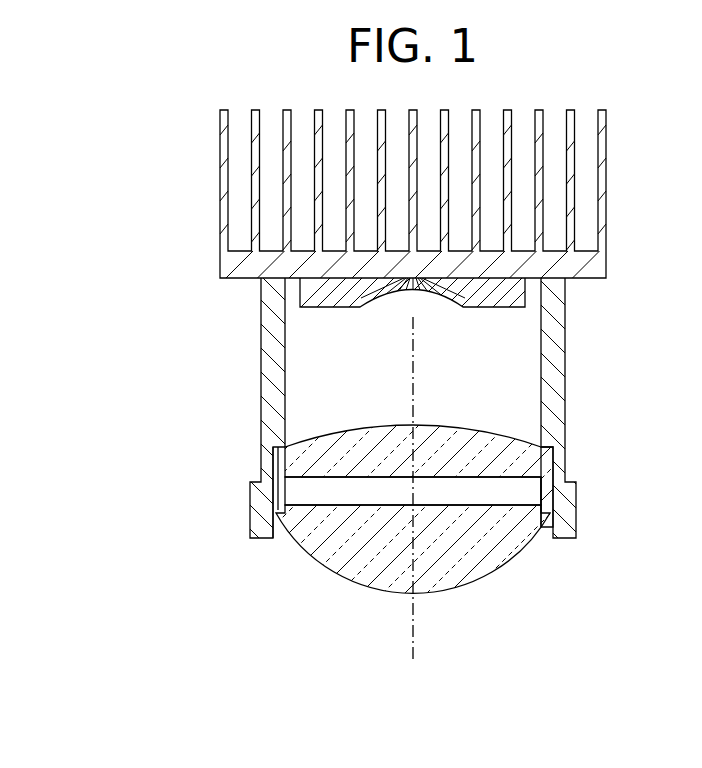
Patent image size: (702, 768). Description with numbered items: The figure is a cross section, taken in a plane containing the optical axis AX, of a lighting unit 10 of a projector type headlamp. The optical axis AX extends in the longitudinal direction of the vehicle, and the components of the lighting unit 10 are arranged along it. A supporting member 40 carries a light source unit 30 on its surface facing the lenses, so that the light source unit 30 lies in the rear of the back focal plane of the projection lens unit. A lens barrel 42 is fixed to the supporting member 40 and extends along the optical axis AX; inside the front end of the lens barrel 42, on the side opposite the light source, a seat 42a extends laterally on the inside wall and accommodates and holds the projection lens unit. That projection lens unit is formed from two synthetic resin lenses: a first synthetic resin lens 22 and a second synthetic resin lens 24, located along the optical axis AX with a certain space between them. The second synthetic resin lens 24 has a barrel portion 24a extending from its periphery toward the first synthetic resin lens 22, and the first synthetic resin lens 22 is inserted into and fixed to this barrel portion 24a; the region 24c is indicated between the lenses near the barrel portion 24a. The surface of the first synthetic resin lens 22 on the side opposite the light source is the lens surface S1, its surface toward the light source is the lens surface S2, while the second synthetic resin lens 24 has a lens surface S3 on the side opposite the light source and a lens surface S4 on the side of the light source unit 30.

The lighting unit 10 is at (228, 307).
The supporting member 40 is at (607, 272).
The light source unit 30 is at (512, 308).
The lens barrel 42 is at (272, 360).
The seat 42a is at (272, 447).
The second synthetic resin lens 24 is at (438, 440).
The barrel portion 24a is at (552, 498).
The recess of first lens 24c is at (507, 493).
The first synthetic resin lens 22 is at (482, 582).
The lens surface S1 is at (322, 578).
The lens surface S2 is at (350, 500).
The lens surface S3 is at (477, 487).
The lens surface S4 is at (384, 432).
The optical axis AX is at (414, 648).